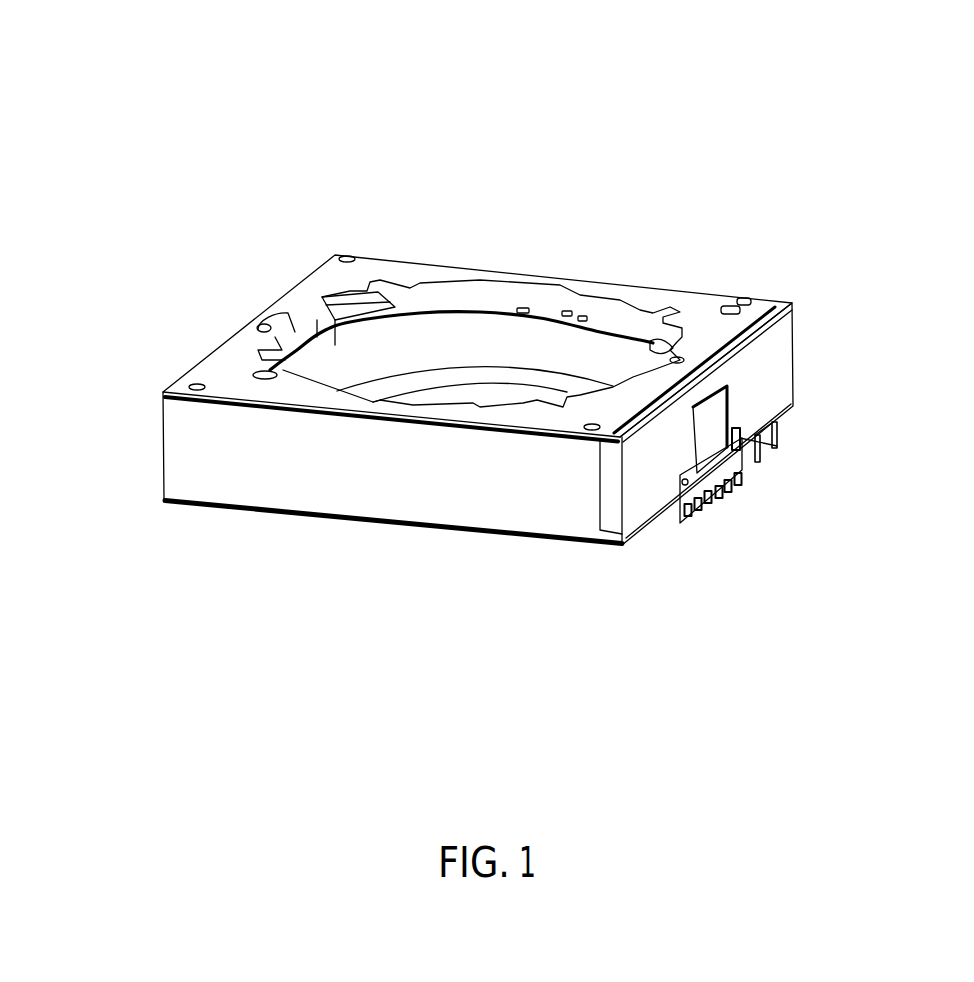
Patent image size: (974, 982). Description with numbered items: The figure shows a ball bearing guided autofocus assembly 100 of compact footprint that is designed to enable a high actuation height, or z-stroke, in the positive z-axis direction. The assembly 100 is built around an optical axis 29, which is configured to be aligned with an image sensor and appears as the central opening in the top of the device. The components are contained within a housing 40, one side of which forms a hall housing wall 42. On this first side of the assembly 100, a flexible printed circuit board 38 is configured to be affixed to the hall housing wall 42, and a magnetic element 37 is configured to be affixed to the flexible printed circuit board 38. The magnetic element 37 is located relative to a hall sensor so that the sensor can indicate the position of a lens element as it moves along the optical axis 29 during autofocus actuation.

The guided autofocus assembly 100 is at (487, 321).
The housing 40 is at (158, 420).
The optical axis 29 is at (473, 387).
The hall housing wall 42 is at (770, 373).
The magnetic element 37 is at (712, 435).
The flexible printed circuit board 38 is at (682, 522).